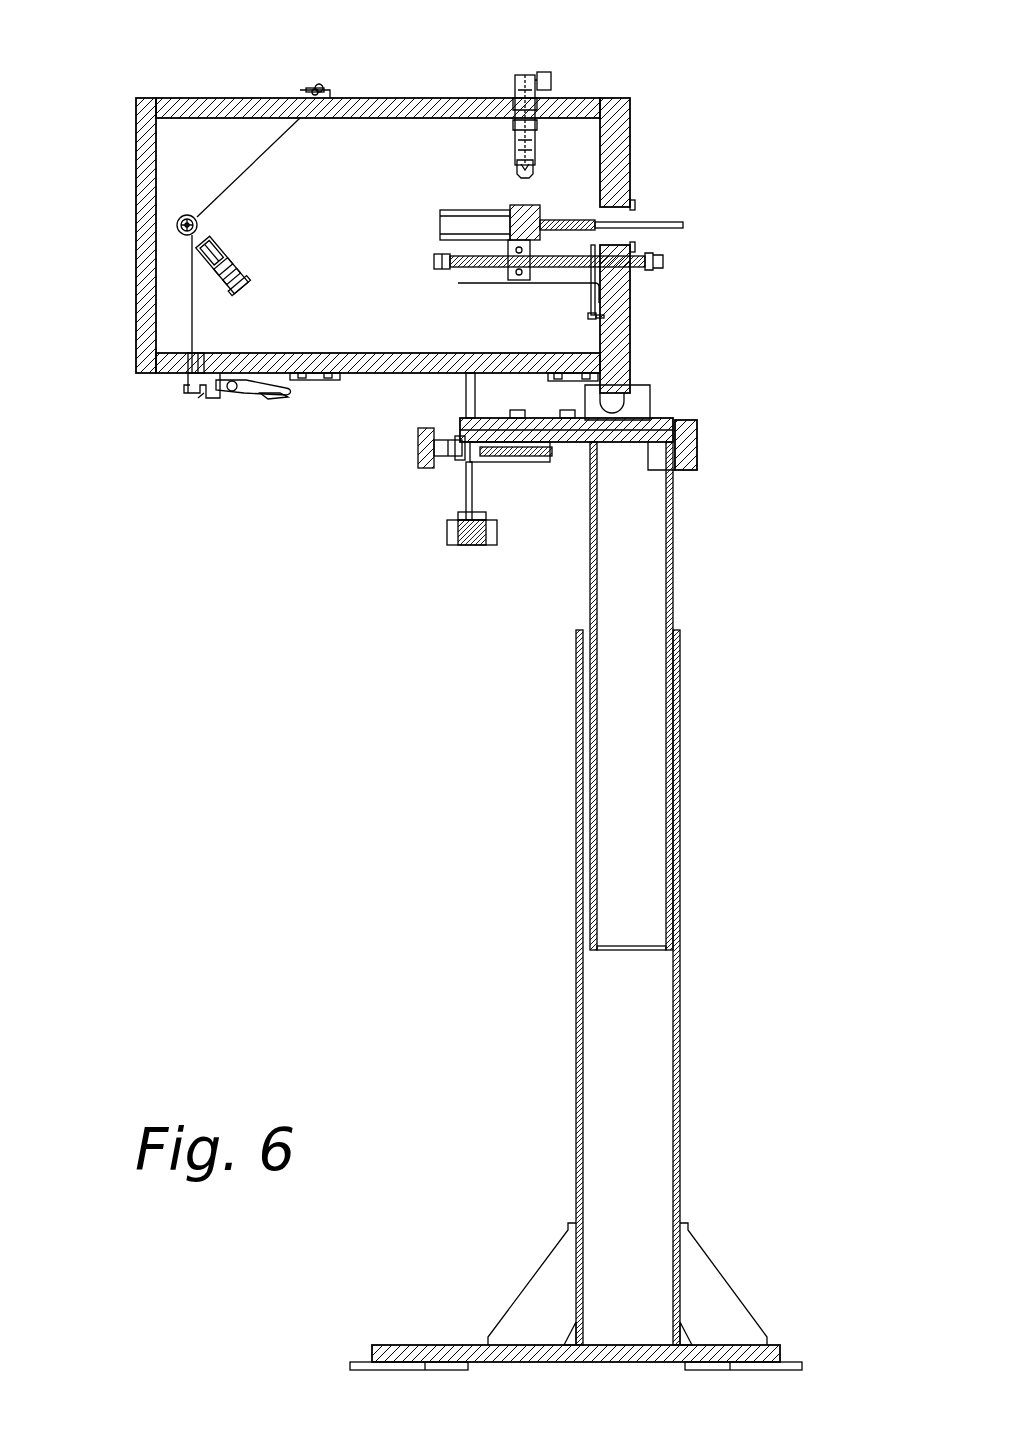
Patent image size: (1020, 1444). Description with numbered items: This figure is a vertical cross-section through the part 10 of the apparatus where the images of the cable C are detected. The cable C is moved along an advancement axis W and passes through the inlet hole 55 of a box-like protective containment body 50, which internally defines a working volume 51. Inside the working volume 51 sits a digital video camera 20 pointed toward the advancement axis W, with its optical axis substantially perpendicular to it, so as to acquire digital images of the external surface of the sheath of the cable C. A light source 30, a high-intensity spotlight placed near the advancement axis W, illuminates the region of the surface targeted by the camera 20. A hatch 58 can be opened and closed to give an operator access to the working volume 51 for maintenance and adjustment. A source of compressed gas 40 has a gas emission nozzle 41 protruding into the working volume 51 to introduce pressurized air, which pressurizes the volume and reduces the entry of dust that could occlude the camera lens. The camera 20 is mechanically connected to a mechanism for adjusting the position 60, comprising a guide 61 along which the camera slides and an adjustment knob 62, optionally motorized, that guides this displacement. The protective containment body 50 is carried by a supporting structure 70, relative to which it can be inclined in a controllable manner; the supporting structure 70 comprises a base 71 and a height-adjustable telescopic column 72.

The part of the apparatus 10 is at (765, 135).
The digital video camera 20 is at (455, 226).
The light source 30 is at (232, 257).
The source of compressed gas 40 is at (545, 72).
The gas emission nozzle 41 is at (518, 170).
The protective containment body 50 is at (447, 96).
The working volume 51 is at (365, 145).
The inlet hole 55 is at (182, 232).
The hatch 58 is at (145, 133).
The mechanism for adjusting the position 60 is at (580, 250).
The guide 61 is at (558, 262).
The adjustment knob 62 is at (660, 262).
The supporting structure 70 is at (683, 672).
The base 71 is at (458, 1350).
The height-adjustable telescopic column 72 is at (680, 897).
The advancement axis W is at (193, 214).
The cable C is at (172, 220).